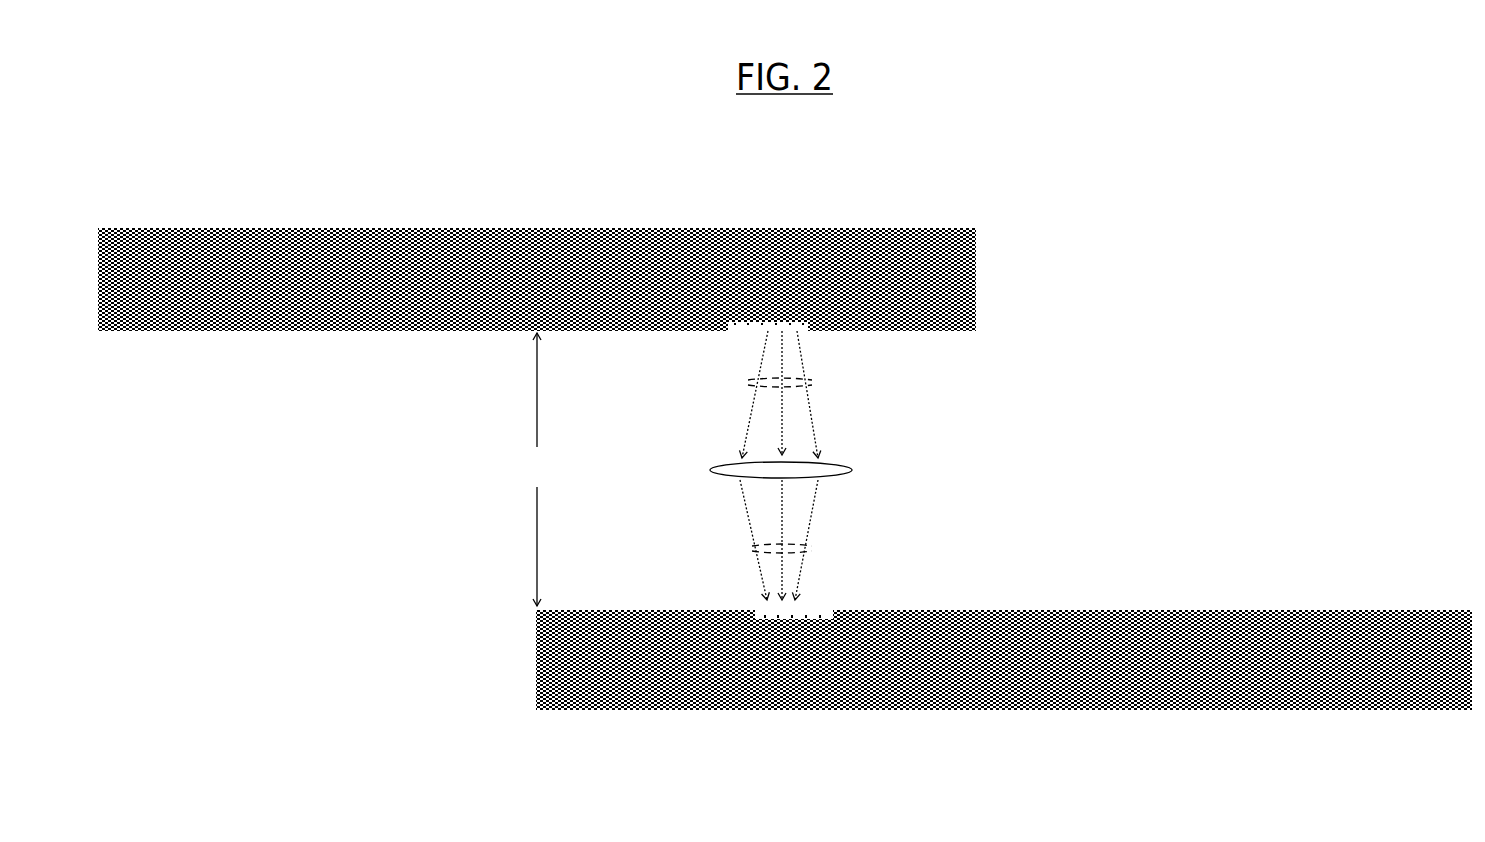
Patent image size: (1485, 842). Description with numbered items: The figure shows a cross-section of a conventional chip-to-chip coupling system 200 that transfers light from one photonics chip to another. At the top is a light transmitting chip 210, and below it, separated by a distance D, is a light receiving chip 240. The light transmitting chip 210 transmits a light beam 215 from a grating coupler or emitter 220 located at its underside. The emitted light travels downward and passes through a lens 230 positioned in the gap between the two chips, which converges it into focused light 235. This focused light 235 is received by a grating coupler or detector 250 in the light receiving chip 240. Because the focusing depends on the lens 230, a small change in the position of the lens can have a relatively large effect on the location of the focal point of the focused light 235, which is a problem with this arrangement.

The chip-to-chip coupling system 200 is at (582, 193).
The light transmitting chip 210 is at (978, 278).
The light beam 215 is at (812, 383).
The grating coupler or emitter 220 is at (754, 333).
The lens 230 is at (852, 472).
The focused light 235 is at (755, 545).
The light receiving chip 240 is at (1118, 712).
The grating coupler or detector 250 is at (808, 612).